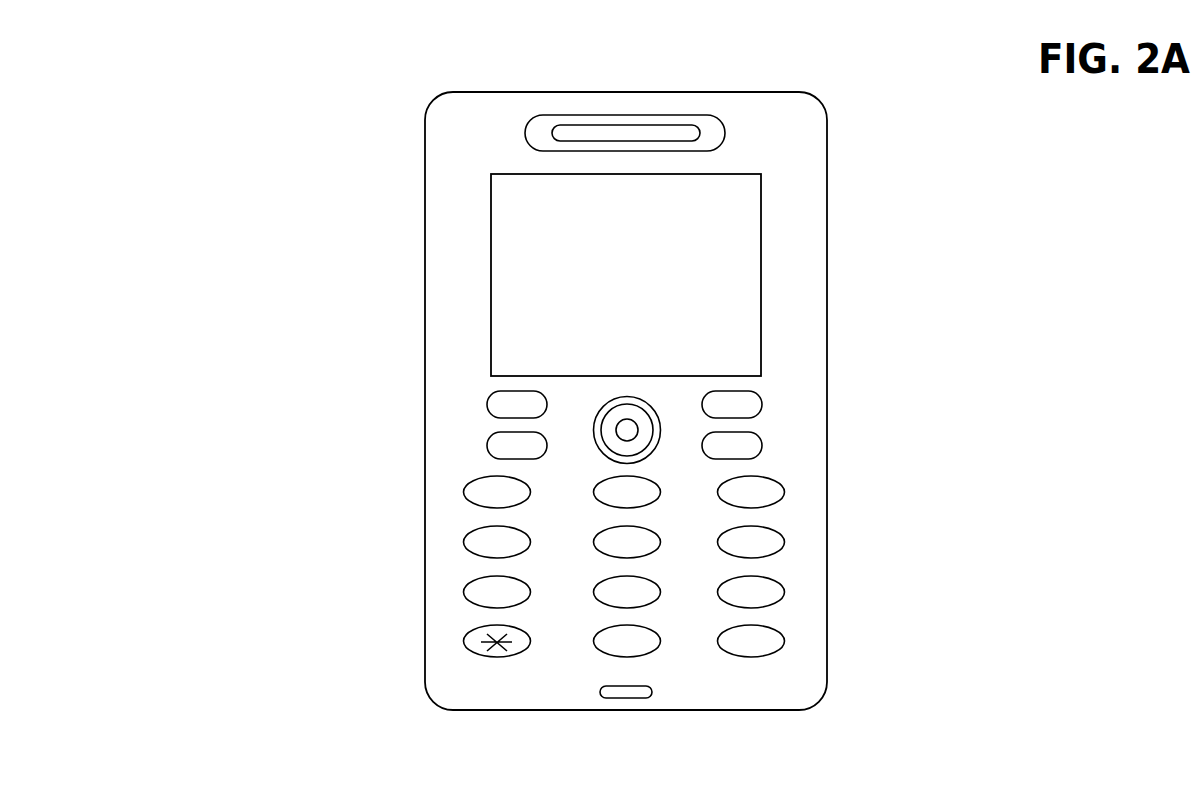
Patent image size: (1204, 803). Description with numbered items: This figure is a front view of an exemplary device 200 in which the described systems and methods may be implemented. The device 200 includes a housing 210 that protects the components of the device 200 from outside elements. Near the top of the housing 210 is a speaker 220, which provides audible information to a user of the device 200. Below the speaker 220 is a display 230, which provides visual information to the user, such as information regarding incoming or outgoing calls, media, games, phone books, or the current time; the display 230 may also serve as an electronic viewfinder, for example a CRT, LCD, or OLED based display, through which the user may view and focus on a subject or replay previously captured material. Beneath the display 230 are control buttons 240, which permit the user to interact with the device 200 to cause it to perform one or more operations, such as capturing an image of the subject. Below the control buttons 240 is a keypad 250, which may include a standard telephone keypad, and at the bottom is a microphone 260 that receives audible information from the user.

The device 200 is at (276, 49).
The housing 210 is at (425, 400).
The speaker 220 is at (626, 116).
The display 230 is at (761, 272).
The control buttons 240 is at (775, 379).
The keypad 250 is at (796, 648).
The microphone 260 is at (628, 698).